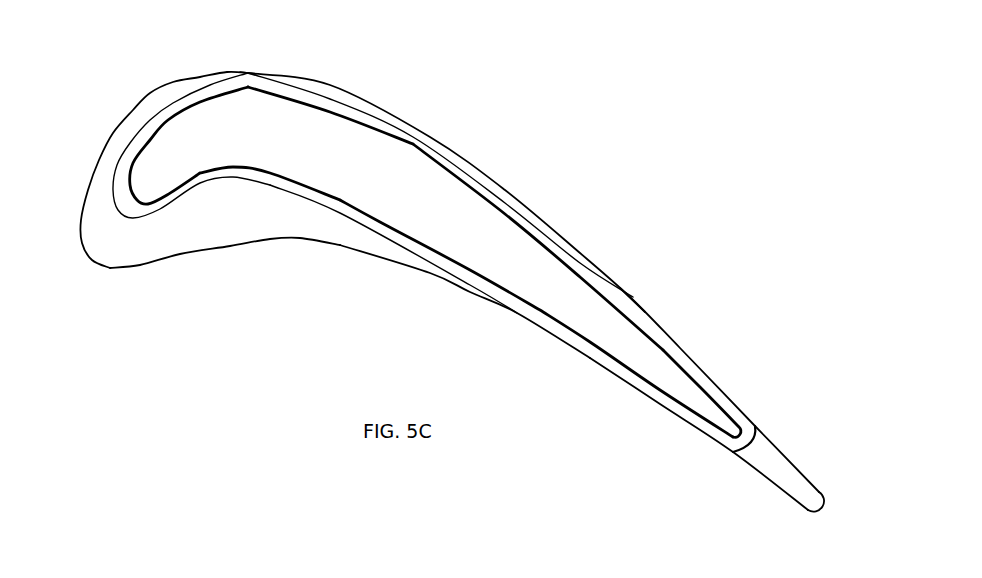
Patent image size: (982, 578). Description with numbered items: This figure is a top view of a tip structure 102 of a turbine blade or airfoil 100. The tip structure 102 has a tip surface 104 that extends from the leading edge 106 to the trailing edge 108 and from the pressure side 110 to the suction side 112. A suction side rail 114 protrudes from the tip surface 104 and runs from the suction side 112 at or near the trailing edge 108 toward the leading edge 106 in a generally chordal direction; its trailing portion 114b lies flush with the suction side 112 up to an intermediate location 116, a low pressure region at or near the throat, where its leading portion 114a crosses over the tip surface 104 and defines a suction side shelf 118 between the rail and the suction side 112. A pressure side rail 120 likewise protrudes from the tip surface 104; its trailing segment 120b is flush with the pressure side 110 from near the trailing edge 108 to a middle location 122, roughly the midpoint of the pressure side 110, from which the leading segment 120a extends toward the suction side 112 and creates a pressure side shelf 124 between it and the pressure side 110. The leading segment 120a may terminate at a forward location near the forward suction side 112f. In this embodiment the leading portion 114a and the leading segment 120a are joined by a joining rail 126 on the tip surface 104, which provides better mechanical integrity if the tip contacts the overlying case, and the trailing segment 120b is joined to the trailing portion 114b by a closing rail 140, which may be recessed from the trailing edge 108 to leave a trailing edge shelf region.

The airfoil 100 is at (633, 90).
The tip structure 102 is at (441, 294).
The tip surface 104 is at (99, 172).
The leading edge 106 is at (86, 273).
The trailing edge 108 is at (826, 520).
The pressure side 110 is at (430, 274).
The suction side 112 is at (505, 190).
The forward suction side 112f is at (227, 72).
The suction side rail 114 is at (416, 141).
The leading portion 114a is at (330, 98).
The trailing portion 114b is at (757, 387).
The intermediate location 116 is at (639, 291).
The suction side shelf 118 is at (458, 166).
The pressure side rail 120 is at (379, 243).
The leading segment 120a is at (265, 187).
The trailing segment 120b is at (682, 418).
The middle location 122 is at (604, 394).
The pressure side shelf 124 is at (285, 240).
The joining rail 126 is at (172, 103).
The closing rail 140 is at (758, 443).